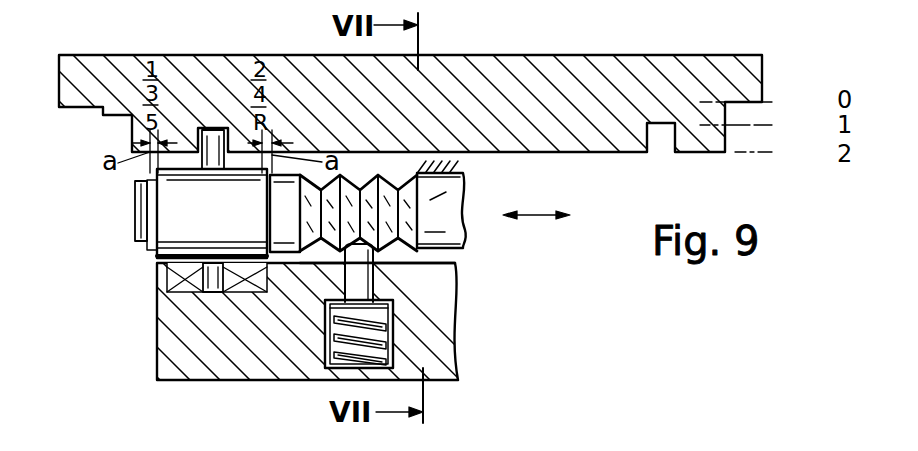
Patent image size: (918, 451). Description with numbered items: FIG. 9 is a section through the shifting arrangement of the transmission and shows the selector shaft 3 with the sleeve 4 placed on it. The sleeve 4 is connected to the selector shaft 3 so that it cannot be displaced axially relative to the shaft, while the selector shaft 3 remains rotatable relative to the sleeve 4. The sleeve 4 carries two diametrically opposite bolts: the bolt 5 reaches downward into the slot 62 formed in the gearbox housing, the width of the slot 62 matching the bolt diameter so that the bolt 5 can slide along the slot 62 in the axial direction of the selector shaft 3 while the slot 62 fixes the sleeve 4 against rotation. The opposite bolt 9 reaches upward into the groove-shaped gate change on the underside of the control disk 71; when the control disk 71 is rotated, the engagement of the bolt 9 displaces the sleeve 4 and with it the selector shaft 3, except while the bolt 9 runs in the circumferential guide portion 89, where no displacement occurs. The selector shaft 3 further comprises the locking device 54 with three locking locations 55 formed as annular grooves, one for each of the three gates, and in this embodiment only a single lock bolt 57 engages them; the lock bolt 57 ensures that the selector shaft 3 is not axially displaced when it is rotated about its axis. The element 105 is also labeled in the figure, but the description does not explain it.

The cylinder housing 3 is at (438, 197).
The piston body 4 is at (197, 227).
The lower guide pin 5 is at (200, 283).
The end cap 9 is at (153, 173).
The support block top surface 54 is at (458, 273).
The bellows sealing lips 55 is at (399, 249).
The spring-loaded pin 57 is at (360, 283).
The support block 62 is at (173, 310).
The guide plate 71 is at (521, 84).
The upper guide pin 89 is at (204, 128).
The guide member 105 is at (283, 7).